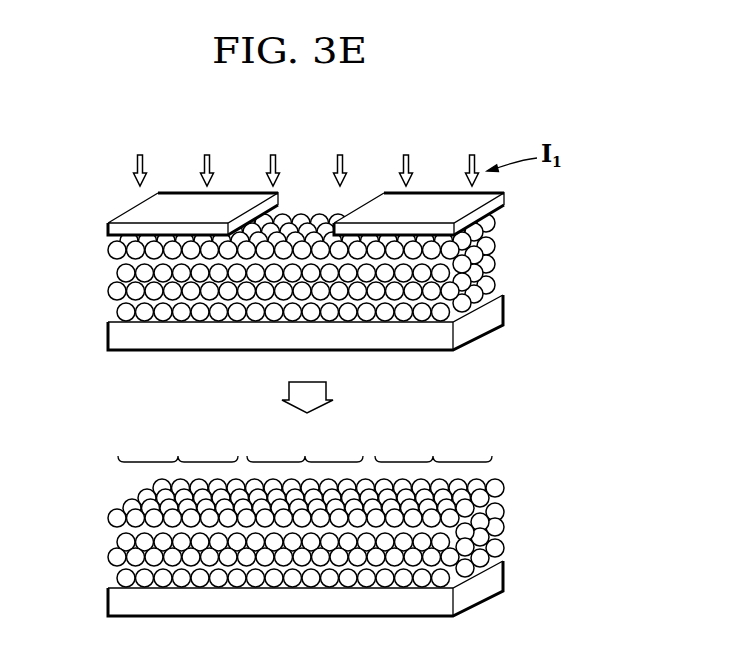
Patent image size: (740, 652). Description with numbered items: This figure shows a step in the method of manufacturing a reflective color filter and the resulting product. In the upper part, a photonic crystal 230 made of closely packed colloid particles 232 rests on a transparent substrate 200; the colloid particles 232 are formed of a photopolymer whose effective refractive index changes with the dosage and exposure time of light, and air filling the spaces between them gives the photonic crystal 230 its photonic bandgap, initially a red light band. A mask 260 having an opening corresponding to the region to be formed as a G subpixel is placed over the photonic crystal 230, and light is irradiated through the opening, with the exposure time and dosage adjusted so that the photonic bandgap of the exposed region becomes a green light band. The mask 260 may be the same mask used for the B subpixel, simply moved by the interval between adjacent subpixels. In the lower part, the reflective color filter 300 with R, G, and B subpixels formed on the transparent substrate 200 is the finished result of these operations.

The transparent substrate 200 is at (500, 312).
The photonic crystal 230 is at (356, 267).
The colloid particles 232 is at (508, 237).
The mask 260 is at (136, 218).
The reflective color filter 300 is at (540, 494).